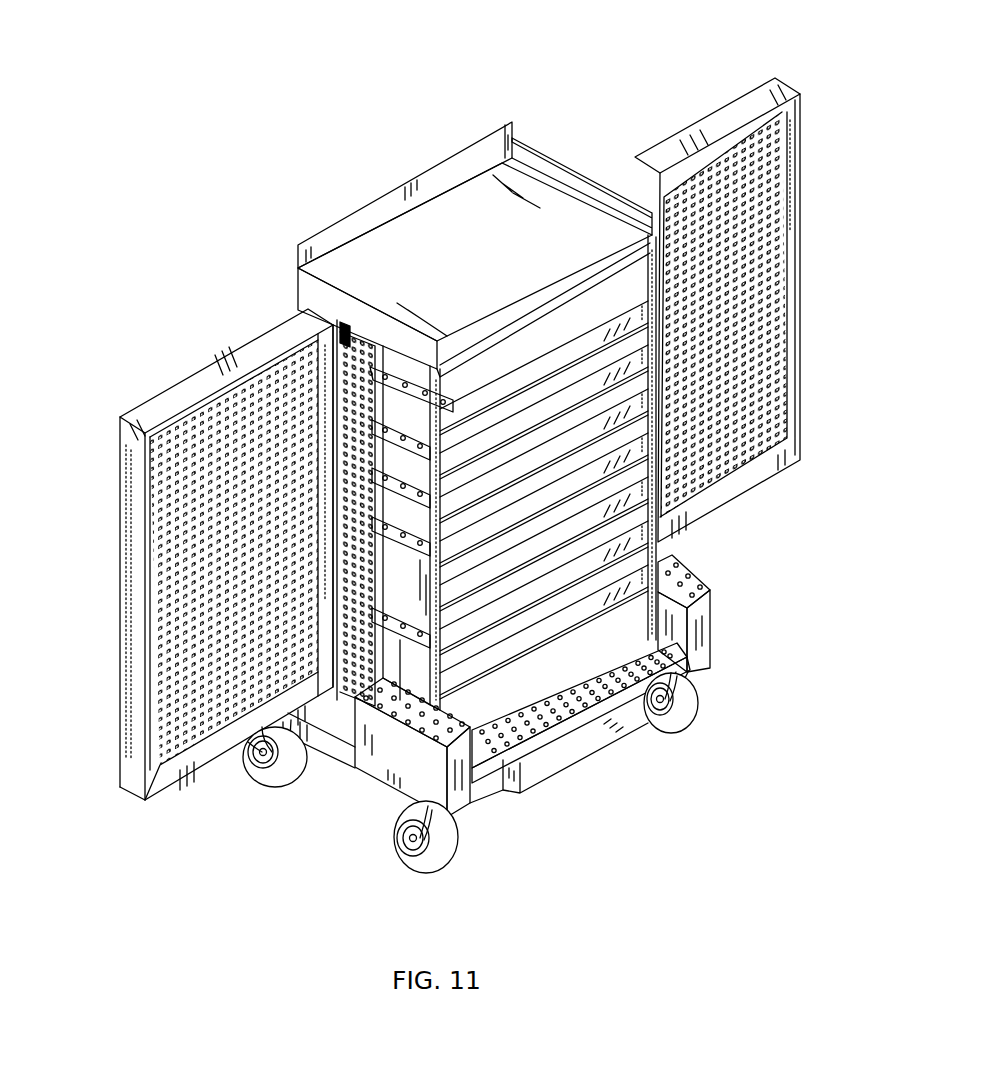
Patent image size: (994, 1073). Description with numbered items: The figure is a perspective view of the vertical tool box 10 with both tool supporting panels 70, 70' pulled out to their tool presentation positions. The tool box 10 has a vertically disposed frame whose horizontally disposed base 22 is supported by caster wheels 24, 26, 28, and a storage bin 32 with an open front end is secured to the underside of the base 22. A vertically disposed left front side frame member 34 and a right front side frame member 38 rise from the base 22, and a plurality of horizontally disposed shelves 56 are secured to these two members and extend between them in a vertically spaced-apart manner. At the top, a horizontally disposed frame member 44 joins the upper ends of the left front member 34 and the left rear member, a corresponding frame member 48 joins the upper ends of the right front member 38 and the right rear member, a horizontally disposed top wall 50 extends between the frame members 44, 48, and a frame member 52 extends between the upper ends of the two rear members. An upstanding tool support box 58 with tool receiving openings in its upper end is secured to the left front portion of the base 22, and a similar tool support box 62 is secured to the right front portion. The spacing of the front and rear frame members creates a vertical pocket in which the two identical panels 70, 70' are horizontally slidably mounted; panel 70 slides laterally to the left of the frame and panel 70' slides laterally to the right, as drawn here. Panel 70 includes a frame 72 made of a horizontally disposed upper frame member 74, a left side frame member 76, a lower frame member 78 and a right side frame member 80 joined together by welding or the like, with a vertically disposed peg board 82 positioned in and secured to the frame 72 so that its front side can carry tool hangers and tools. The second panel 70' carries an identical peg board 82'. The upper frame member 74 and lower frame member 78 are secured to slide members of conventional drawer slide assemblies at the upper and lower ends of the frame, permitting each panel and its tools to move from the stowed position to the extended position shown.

The vertical tool box 10 is at (543, 108).
The base 22 is at (403, 793).
The caster wheel 24 is at (450, 837).
The caster wheel 26 is at (297, 735).
The caster wheel 28 is at (693, 708).
The storage bin 32 is at (577, 743).
The left front side frame member 34 is at (414, 679).
The right front side frame member 38 is at (635, 567).
The frame member 44 is at (312, 290).
The frame member 48 is at (557, 178).
The top wall 50 is at (490, 280).
The frame member 52 is at (402, 203).
The shelves 56 is at (554, 506).
The tool support box 58 is at (400, 753).
The tool support box 62 is at (703, 627).
The tool supporting panel 70 is at (239, 539).
The tool supporting panel 70' is at (717, 287).
The frame 72 is at (124, 557).
The upper frame member 74 is at (160, 405).
The left side frame member 76 is at (130, 613).
The lower frame member 78 is at (225, 750).
The right side frame member 80 is at (326, 388).
The peg board 82 is at (234, 606).
The peg board 82' is at (734, 329).